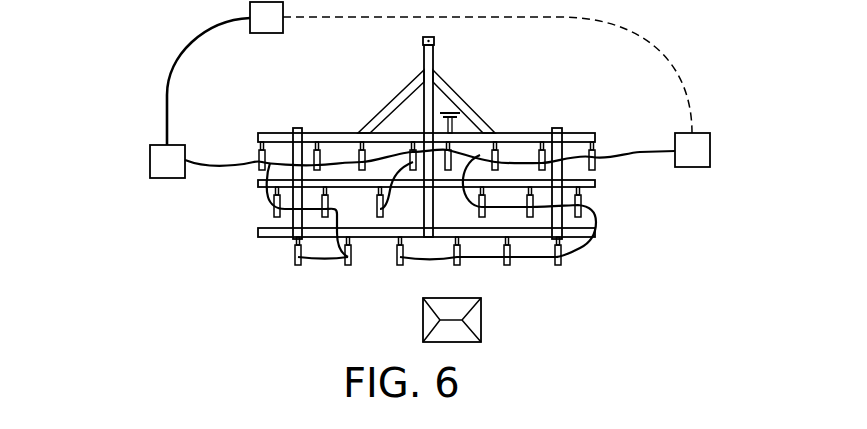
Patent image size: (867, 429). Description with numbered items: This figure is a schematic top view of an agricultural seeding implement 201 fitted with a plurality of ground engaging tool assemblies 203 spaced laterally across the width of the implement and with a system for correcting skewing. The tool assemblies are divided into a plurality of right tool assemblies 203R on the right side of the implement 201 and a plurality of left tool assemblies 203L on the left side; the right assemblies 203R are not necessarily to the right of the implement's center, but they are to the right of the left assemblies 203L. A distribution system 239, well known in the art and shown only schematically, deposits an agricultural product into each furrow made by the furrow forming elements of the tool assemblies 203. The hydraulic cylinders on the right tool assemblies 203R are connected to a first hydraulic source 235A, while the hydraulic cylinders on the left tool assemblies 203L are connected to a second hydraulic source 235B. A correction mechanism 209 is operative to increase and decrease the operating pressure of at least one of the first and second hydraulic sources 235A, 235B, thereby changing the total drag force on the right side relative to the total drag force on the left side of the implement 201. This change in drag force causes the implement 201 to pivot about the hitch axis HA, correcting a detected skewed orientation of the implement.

The agricultural seeding implement 201 is at (442, 166).
The ground engaging tool assemblies 203 is at (479, 195).
The left tool assemblies 203L is at (348, 160).
The right ground engaging tool assemblies 203R is at (378, 209).
The correction mechanism 209 is at (268, 34).
The first hydraulic source 235A is at (710, 150).
The second hydraulic source 235B is at (150, 158).
The distribution system 239 is at (481, 320).
The hitch axis HA is at (434, 40).